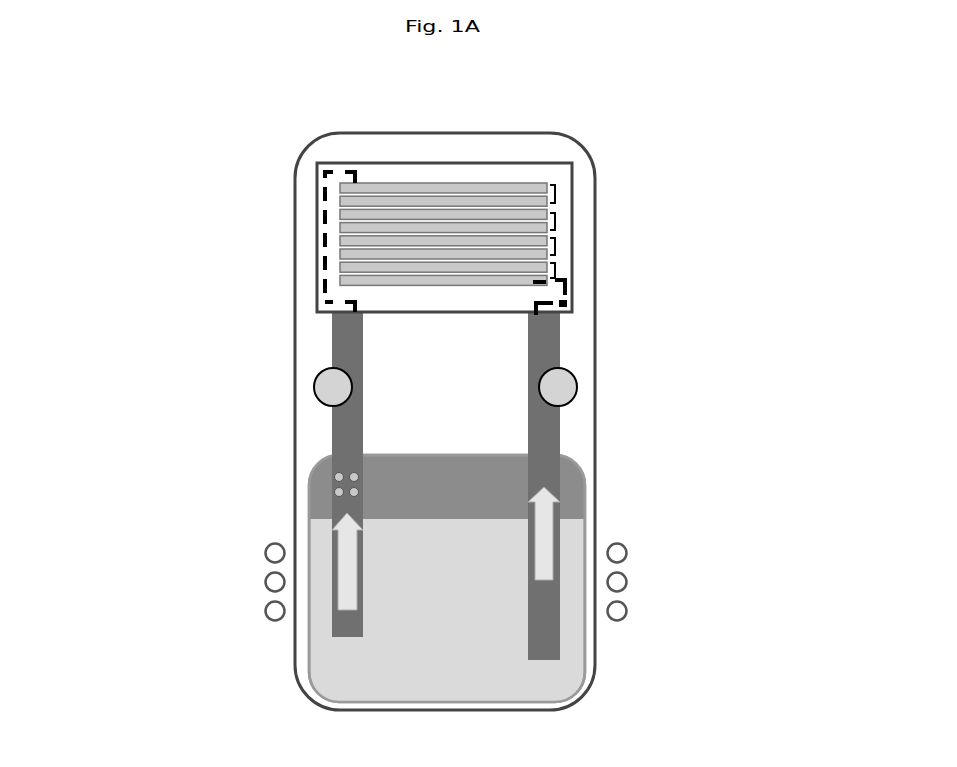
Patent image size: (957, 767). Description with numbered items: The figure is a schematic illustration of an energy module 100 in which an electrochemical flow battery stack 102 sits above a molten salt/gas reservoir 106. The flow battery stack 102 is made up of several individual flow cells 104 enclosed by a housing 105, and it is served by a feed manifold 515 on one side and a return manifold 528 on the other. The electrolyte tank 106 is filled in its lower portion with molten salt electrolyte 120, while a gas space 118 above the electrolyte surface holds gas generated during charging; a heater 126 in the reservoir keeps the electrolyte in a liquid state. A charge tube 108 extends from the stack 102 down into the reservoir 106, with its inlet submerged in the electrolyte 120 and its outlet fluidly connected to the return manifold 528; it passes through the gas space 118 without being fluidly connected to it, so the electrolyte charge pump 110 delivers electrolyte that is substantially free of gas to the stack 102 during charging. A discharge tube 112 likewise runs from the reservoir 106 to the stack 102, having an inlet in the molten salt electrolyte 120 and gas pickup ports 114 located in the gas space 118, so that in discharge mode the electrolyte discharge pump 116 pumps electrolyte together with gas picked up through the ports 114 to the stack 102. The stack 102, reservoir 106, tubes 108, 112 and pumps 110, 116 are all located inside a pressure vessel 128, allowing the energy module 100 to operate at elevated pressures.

The energy module 100 is at (608, 133).
The pressure vessel 128 is at (313, 143).
The housing 105 is at (315, 192).
The feed manifold 515 is at (327, 233).
The flow battery stack 102 is at (443, 229).
The flow cells 104 is at (560, 273).
The return manifold 528 is at (570, 290).
The electrolyte discharge pump 116 is at (318, 384).
The electrolyte charge pump 110 is at (577, 384).
The discharge tube 112 is at (333, 435).
The gas pickup ports 114 is at (333, 480).
The gas space 118 is at (422, 503).
The molten salt/gas reservoir 106 is at (463, 578).
The heater 126 is at (636, 575).
The charge tube 108 is at (540, 630).
The molten salt electrolyte 120 is at (432, 612).